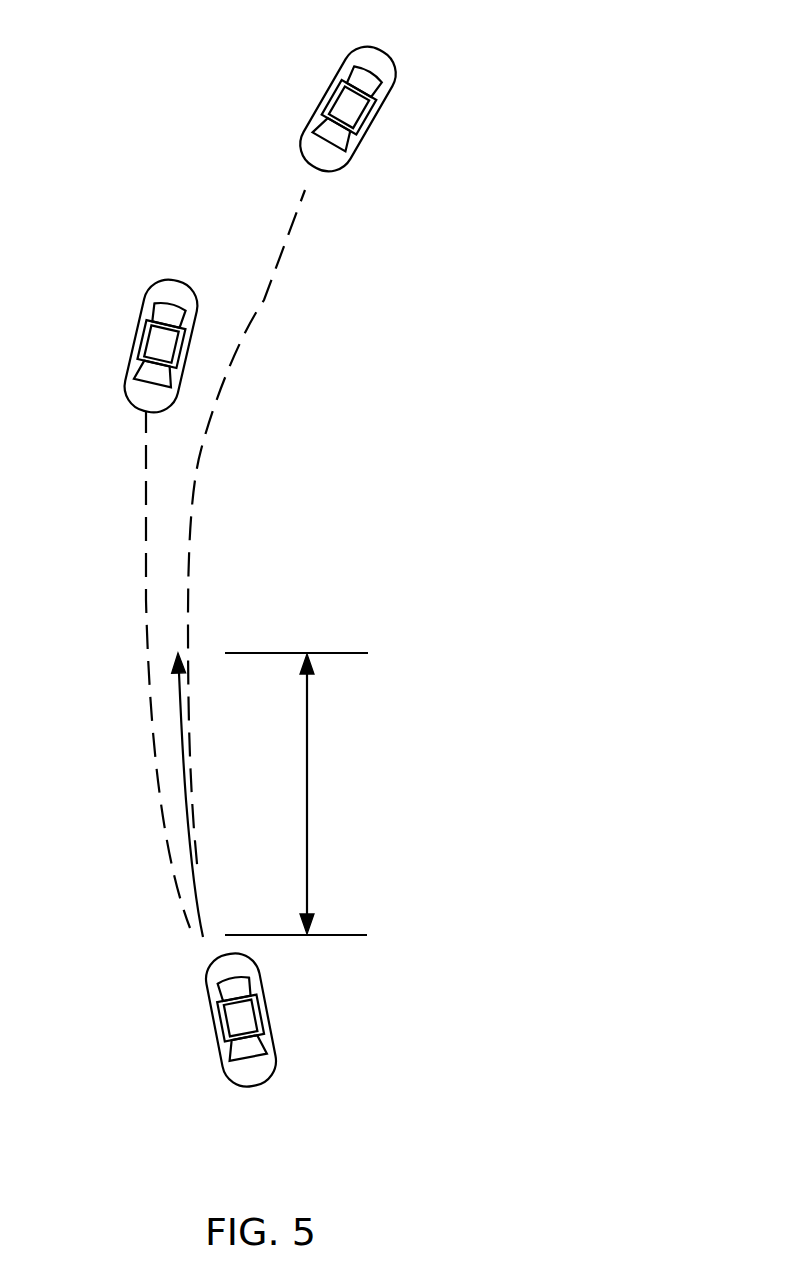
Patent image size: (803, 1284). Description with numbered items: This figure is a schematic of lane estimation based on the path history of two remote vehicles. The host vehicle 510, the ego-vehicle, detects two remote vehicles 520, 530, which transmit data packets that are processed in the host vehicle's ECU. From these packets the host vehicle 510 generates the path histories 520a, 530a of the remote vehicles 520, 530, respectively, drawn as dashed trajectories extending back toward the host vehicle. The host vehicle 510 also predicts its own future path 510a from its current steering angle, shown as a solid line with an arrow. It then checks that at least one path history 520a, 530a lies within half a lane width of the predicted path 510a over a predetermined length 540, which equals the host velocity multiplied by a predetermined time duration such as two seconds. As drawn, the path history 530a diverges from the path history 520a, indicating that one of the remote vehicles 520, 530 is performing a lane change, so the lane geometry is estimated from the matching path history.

The host vehicle 510 is at (217, 1028).
The remote vehicle 520 is at (178, 278).
The remote vehicle 530 is at (363, 50).
The predicted path 510a is at (182, 708).
The path history 520a is at (146, 473).
The path history 530a is at (263, 300).
The predetermined length 540 is at (307, 692).